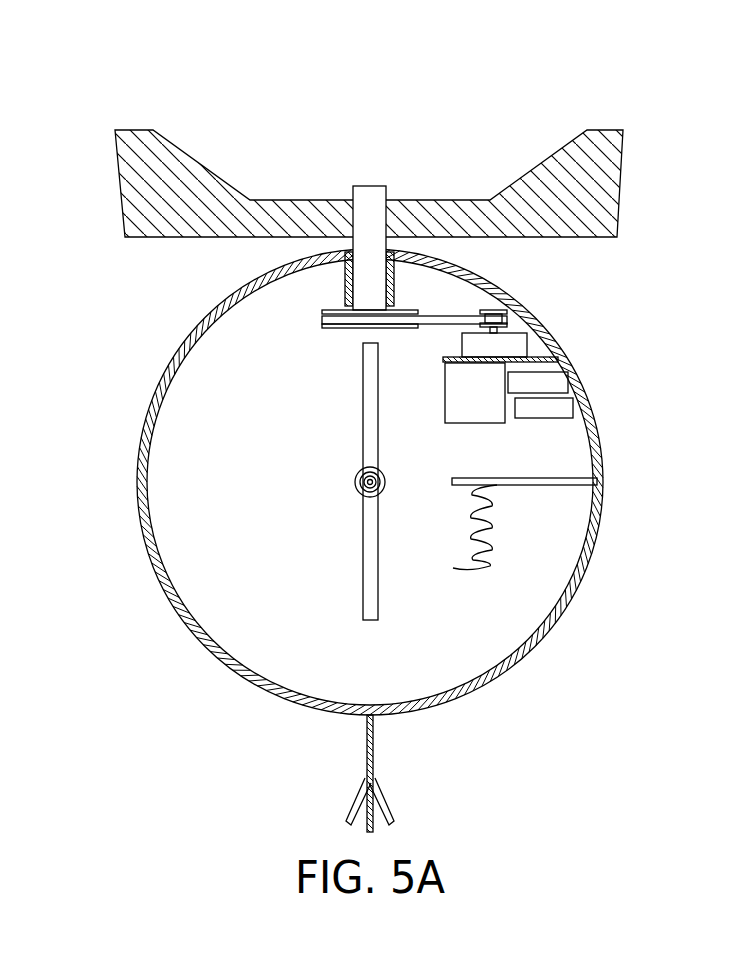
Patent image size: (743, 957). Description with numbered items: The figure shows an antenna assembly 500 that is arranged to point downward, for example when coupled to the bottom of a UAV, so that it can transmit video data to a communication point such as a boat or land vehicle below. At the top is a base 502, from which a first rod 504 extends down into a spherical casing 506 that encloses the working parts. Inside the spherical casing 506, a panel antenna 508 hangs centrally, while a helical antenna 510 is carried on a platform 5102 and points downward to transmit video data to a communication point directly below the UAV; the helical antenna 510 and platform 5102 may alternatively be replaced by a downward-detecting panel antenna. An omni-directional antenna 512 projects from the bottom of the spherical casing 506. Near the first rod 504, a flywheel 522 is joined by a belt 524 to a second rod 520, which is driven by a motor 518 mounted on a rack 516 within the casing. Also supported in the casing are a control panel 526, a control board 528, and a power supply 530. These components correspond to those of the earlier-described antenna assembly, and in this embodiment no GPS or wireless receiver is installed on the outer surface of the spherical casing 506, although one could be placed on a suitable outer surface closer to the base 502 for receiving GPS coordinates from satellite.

The antenna assembly 500 is at (625, 78).
The base 502 is at (608, 188).
The first rod 504 is at (370, 195).
The spherical casing 506 is at (503, 668).
The panel antenna 508 is at (370, 556).
The helical antenna 510 is at (490, 532).
The platform 5102 is at (590, 481).
The omni-directional antenna 512 is at (373, 741).
The rack 516 is at (537, 360).
The motor 518 is at (510, 342).
The second rod 520 is at (492, 313).
The flywheel 522 is at (327, 328).
The belt 524 is at (442, 320).
The control panel 526 is at (557, 383).
The control board 528 is at (565, 407).
The power supply 530 is at (485, 412).